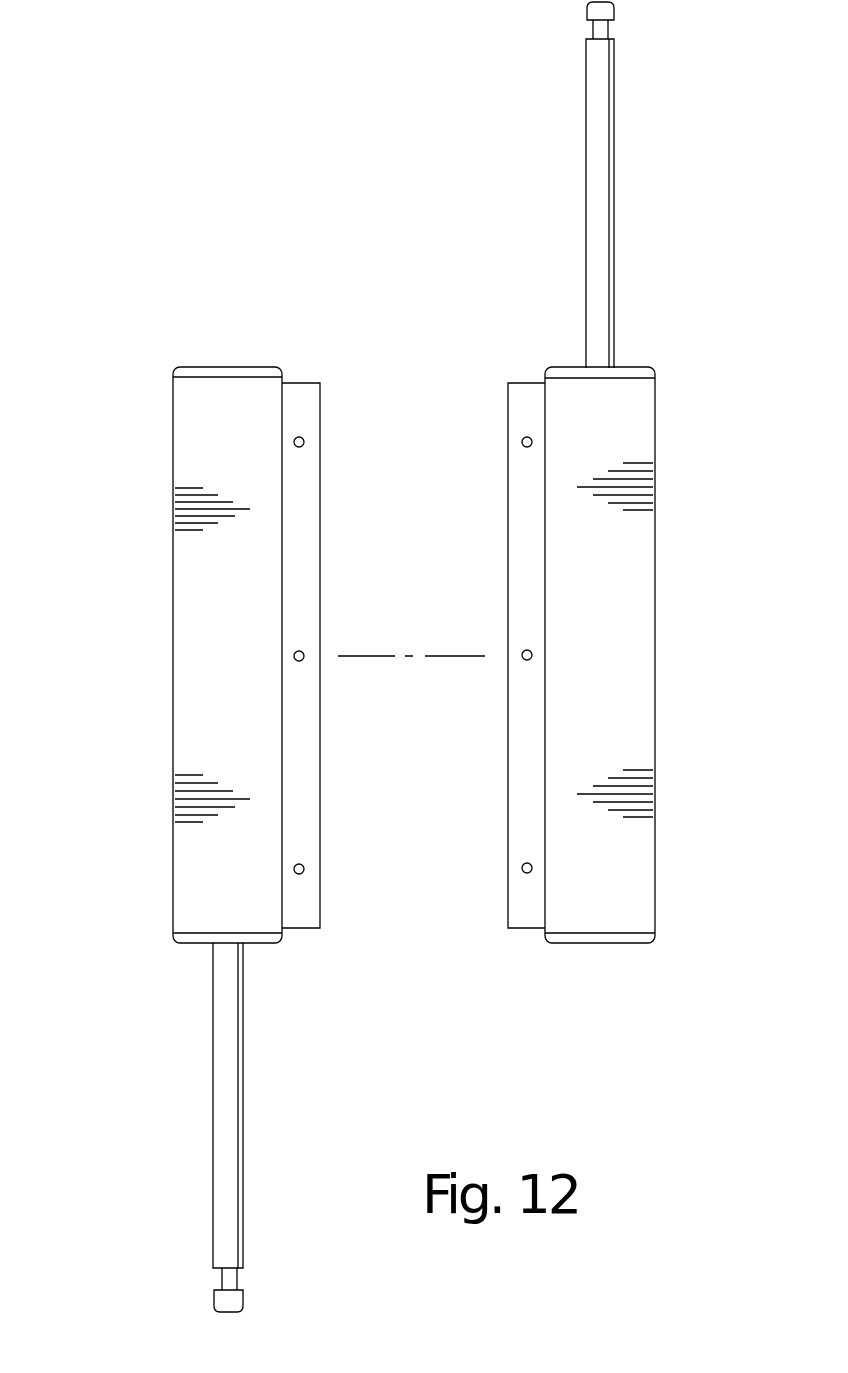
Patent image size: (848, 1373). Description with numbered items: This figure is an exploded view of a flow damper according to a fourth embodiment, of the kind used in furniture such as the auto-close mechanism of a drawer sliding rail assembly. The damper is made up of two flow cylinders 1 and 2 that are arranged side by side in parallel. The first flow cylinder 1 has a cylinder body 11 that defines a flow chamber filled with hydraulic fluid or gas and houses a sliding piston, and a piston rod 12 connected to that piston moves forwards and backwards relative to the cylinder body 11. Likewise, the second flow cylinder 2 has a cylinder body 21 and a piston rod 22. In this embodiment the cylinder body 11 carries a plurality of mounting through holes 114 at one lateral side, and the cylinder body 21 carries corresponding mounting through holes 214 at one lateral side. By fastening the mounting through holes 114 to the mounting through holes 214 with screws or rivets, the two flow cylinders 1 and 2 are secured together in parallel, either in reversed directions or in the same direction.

The first flow cylinder 1 is at (138, 605).
The cylinder body 11 is at (174, 670).
The mounting through holes 114 is at (302, 437).
The piston rod 12 is at (214, 1127).
The second flow cylinder 2 is at (672, 667).
The cylinder body 21 is at (655, 556).
The mounting through holes 214 is at (532, 437).
The piston rod 22 is at (613, 131).